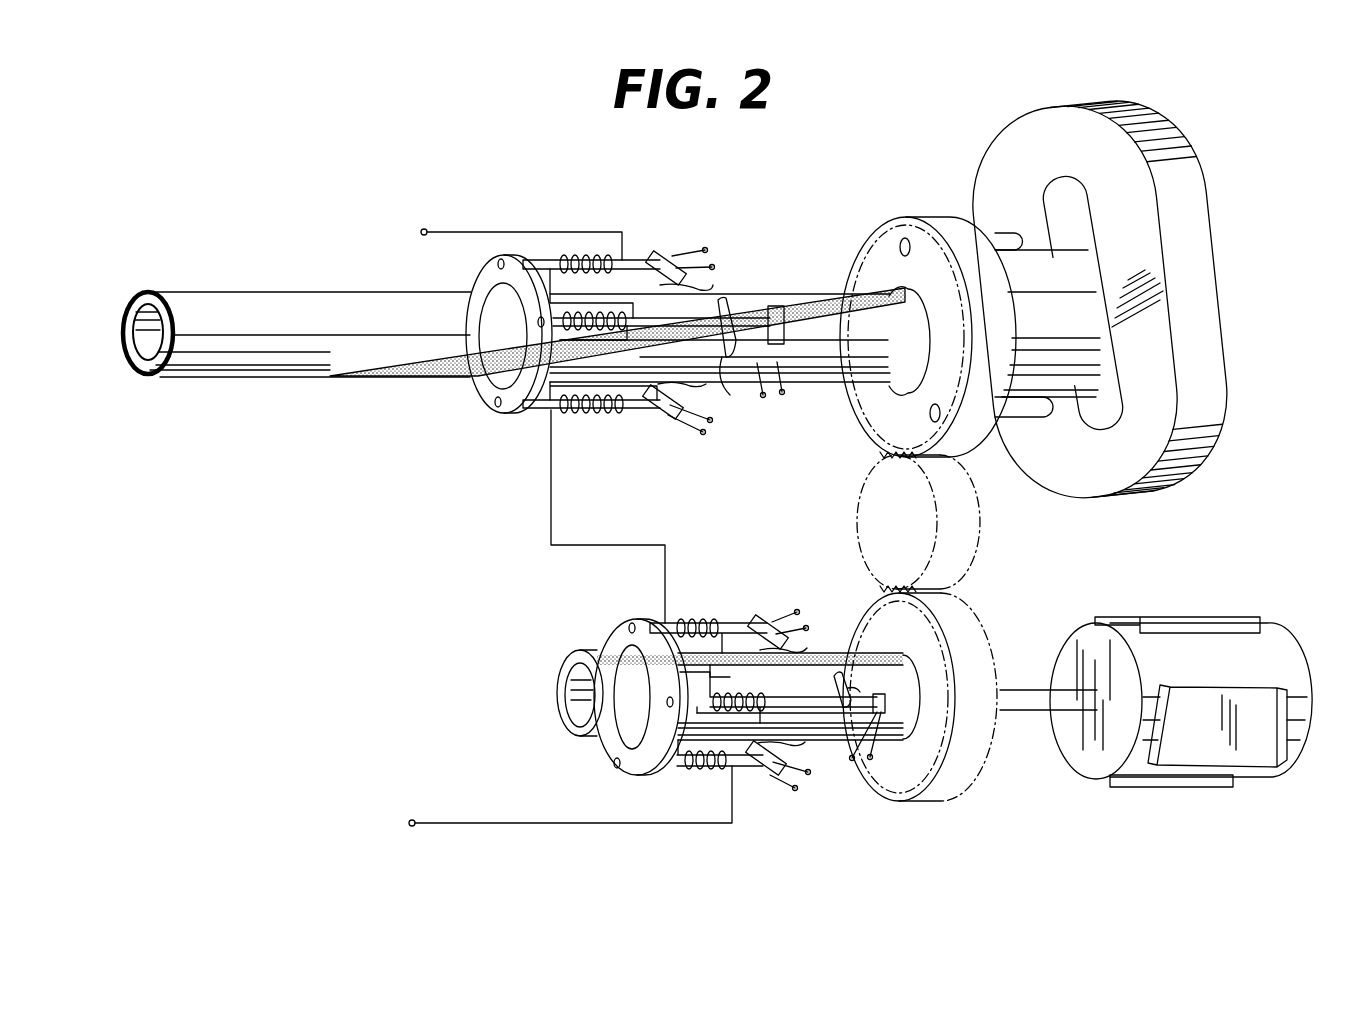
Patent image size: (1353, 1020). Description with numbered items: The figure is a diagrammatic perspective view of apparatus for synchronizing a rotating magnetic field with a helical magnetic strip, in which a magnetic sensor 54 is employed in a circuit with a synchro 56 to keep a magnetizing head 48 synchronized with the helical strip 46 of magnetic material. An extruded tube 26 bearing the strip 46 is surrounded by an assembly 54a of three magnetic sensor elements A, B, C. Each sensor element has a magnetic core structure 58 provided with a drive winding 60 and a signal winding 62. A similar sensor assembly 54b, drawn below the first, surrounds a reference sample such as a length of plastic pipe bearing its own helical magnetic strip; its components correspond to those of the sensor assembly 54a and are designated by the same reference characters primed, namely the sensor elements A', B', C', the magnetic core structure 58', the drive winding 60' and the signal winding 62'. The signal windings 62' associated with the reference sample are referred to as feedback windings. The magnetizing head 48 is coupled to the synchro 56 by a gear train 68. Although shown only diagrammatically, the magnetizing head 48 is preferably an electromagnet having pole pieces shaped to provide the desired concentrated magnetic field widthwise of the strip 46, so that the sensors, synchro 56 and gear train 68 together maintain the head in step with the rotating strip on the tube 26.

The extruded tube 26 is at (258, 348).
The strip of magnetic material 46 is at (437, 347).
The magnetizing head 48 is at (993, 181).
The magnetic sensor 54 is at (480, 425).
The sensor assembly 54a is at (600, 228).
The sensor assembly 54b is at (576, 632).
The synchro 56 is at (1082, 763).
The magnetic core structure 58 is at (751, 364).
The magnetic core structure 58' is at (832, 690).
The drive winding 60 is at (543, 405).
The drive winding 60' is at (587, 697).
The signal winding 62 is at (738, 343).
The signal winding 62' is at (813, 691).
The gear train 68 is at (996, 540).
The magnetic sensor element A is at (743, 262).
The magnetic sensor element B is at (819, 337).
The magnetic sensor element C is at (634, 461).
The magnetic sensor element A' is at (854, 629).
The magnetic sensor element B' is at (917, 667).
The magnetic sensor element C' is at (831, 808).